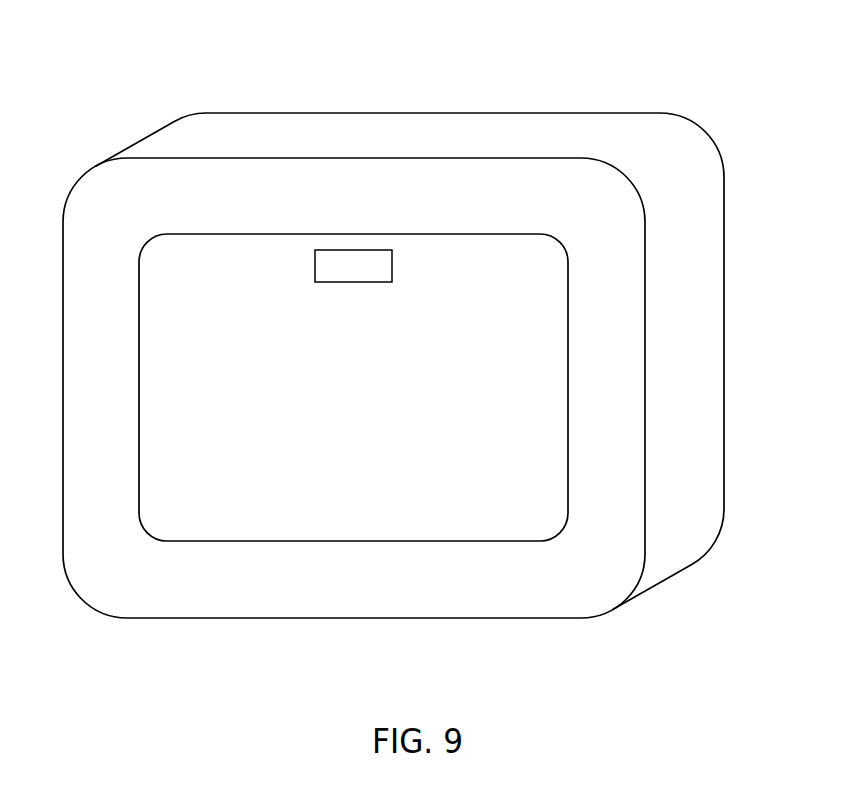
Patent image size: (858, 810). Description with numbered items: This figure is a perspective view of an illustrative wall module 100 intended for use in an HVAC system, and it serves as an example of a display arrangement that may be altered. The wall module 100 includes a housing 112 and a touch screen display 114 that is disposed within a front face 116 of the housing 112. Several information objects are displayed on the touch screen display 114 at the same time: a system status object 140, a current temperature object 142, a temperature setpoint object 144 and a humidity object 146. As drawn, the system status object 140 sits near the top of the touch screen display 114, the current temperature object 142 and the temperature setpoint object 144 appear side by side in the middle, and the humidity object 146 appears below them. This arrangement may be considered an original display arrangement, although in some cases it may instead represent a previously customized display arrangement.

The wall module 100 is at (444, 309).
The housing 112 is at (548, 127).
The touch screen display 114 is at (538, 280).
The front face 116 is at (617, 466).
The system status object 140 is at (352, 283).
The current temperature object 142 is at (252, 363).
The temperature setpoint object 144 is at (447, 363).
The humidity object 146 is at (386, 478).